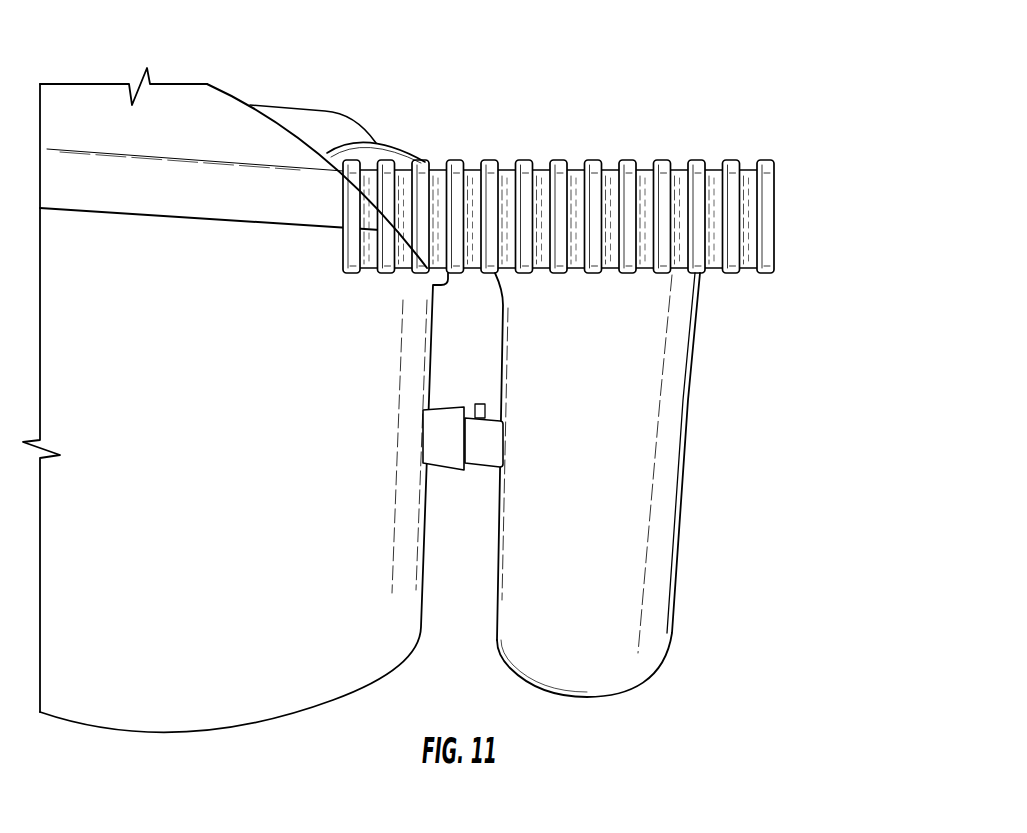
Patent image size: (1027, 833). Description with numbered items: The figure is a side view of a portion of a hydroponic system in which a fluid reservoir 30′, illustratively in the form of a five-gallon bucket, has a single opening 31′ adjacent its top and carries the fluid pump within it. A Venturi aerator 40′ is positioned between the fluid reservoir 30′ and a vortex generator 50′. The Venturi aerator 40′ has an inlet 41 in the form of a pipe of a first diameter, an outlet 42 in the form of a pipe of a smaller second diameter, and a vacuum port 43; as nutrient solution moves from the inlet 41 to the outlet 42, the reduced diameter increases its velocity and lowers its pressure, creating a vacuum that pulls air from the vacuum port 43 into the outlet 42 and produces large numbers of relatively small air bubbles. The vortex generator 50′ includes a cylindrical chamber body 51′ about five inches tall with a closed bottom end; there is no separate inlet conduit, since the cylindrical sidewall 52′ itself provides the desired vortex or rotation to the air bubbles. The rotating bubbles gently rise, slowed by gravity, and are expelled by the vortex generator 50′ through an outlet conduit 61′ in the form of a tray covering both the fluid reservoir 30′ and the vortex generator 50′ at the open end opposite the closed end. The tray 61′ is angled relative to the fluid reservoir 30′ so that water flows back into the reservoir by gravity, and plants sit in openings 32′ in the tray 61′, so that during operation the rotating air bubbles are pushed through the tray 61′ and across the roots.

The fluid reservoir 30′ is at (387, 661).
The opening 31′ is at (281, 117).
The openings 32′ is at (383, 140).
The outlet conduit 61′ is at (445, 175).
The Venturi aerator 40′ is at (443, 488).
The inlet 41 is at (450, 418).
The outlet 42 is at (483, 457).
The vacuum port 43 is at (480, 404).
The vortex generator 50′ is at (692, 528).
The cylindrical chamber body 51′ is at (617, 560).
The sidewall 52′ is at (688, 418).